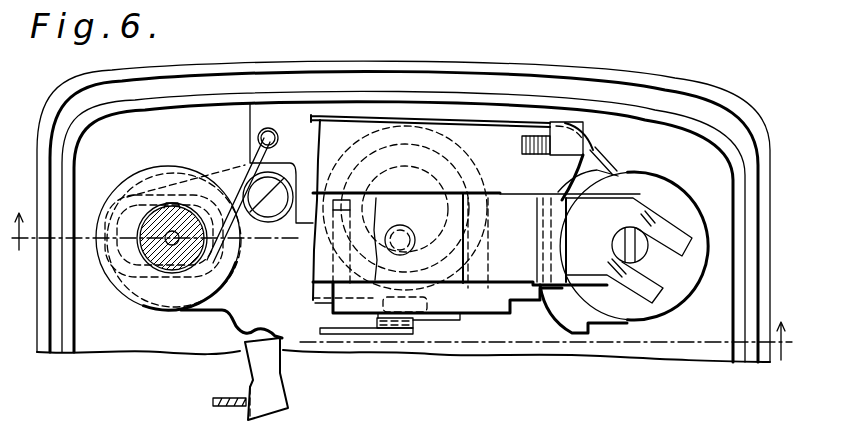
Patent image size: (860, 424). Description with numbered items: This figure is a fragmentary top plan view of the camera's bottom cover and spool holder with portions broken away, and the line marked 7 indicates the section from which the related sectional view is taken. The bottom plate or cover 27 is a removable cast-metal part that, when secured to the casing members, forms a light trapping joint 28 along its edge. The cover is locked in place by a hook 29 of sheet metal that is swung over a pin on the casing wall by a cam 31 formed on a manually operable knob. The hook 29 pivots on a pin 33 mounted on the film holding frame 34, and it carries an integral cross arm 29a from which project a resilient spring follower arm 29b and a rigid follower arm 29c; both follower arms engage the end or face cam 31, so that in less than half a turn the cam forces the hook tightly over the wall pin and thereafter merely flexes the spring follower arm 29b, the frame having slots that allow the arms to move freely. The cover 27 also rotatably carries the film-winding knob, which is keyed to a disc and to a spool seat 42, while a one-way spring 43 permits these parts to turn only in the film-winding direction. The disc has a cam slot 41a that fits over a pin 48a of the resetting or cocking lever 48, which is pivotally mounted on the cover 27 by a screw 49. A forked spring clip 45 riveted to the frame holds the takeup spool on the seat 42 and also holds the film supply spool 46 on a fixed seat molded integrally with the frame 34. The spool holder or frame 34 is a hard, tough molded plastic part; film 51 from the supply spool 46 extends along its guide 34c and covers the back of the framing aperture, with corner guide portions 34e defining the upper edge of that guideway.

The section line 7- 7 is at (400, 303).
The bottom plate or cover 27 is at (677, 343).
The light trapping joint 28 is at (752, 353).
The hook 29 is at (378, 335).
The cross arm 29a is at (457, 320).
The spring follower arm 29b is at (388, 222).
The rigid follower arm 29c is at (470, 252).
The cam 31 is at (455, 150).
The pin 33 is at (432, 320).
The film holding frame 34 is at (318, 302).
The guide 34c is at (598, 168).
The corner guide portions 34e is at (583, 122).
The cam slot 41a is at (128, 197).
The spool seat 42 is at (227, 190).
The one-way spring 43 is at (165, 265).
The forked spring clip 45 is at (532, 178).
The film supply spool 46 is at (657, 186).
The resetting or cocking lever 48 is at (240, 318).
The pin 48a is at (172, 203).
The screw 49 is at (268, 182).
The film 51 is at (497, 118).